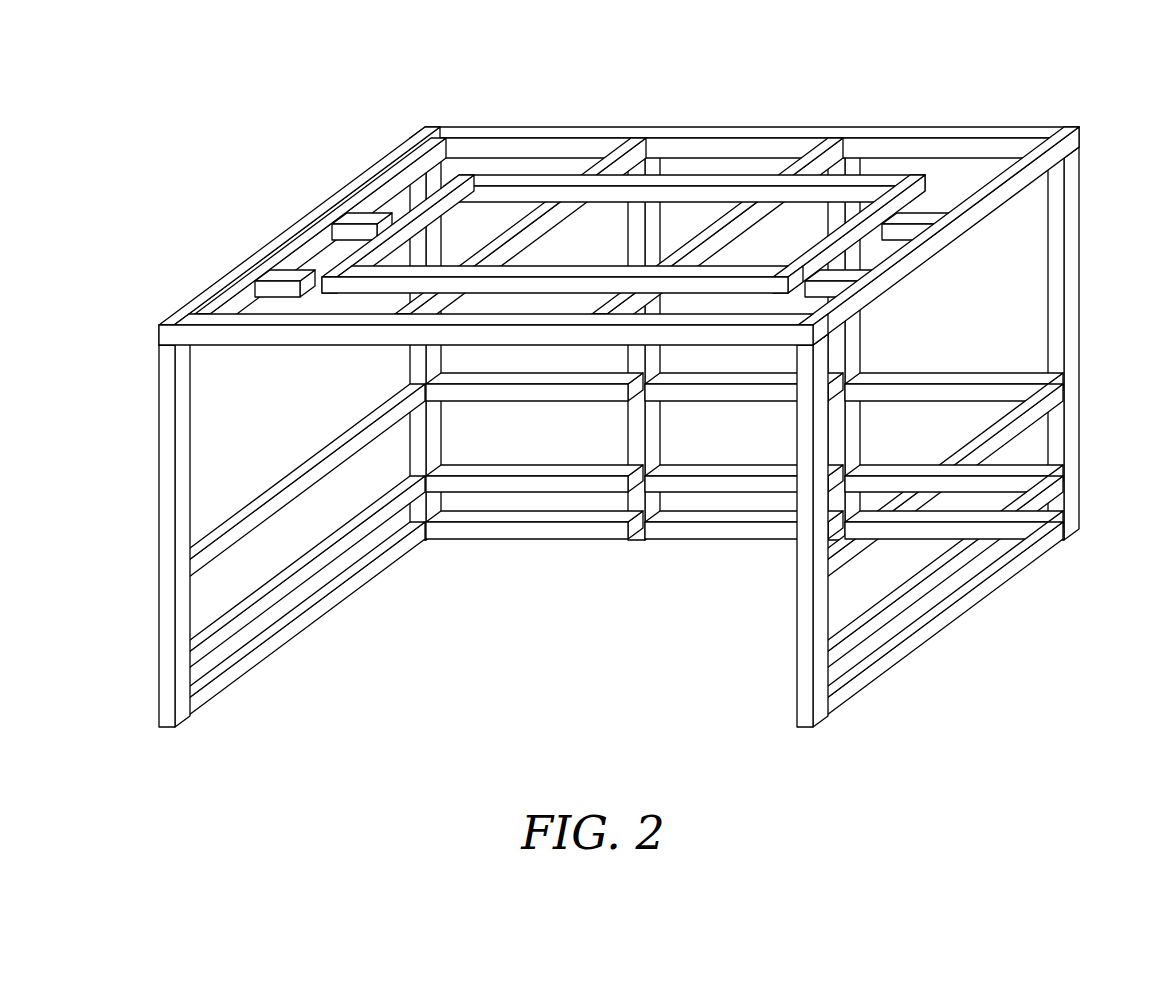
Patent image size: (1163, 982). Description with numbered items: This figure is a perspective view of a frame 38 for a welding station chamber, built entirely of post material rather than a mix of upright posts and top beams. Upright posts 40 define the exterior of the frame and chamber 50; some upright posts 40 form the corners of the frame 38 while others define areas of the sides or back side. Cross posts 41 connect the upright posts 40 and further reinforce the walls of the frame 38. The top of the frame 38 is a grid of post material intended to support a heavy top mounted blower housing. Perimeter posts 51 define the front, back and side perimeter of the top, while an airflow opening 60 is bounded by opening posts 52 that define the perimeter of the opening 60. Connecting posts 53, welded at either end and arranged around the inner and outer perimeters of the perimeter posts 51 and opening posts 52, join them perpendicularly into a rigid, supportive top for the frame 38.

The frame 38 is at (618, 406).
The upright posts 40 is at (158, 486).
The cross posts 41 is at (1062, 397).
The chamber 50 is at (610, 437).
The perimeter posts 51 is at (619, 237).
The opening posts 52 is at (487, 177).
The connecting posts 53 is at (832, 142).
The airflow opening 60 is at (576, 233).